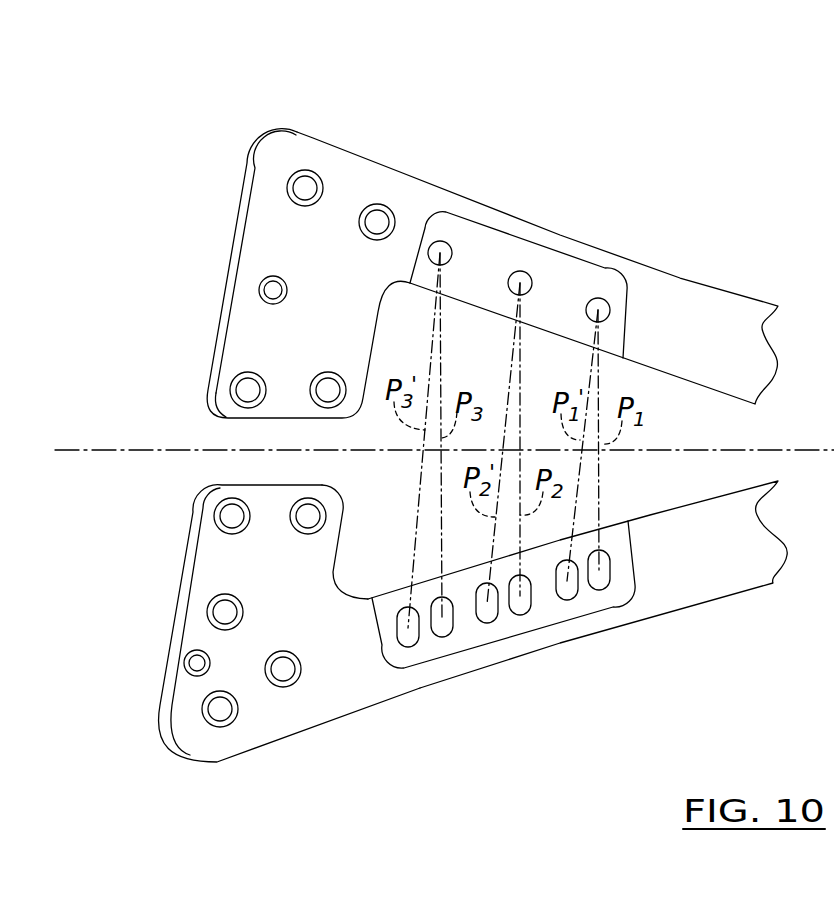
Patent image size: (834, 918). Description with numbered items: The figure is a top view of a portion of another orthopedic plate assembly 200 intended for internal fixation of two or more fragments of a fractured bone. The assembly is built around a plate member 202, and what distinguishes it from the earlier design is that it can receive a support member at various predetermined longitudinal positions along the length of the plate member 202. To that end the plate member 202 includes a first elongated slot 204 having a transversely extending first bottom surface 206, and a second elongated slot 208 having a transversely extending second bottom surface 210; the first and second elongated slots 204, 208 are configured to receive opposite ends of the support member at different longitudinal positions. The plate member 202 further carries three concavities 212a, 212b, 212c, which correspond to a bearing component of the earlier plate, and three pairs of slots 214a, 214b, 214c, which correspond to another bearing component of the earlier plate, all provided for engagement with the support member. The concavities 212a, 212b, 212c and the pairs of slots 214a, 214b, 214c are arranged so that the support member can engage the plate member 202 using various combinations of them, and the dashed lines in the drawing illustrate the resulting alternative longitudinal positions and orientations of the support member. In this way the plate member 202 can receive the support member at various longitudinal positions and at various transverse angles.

The orthopedic plate assembly 200 is at (212, 86).
The plate member 202 is at (256, 238).
The first elongated slot 204 is at (426, 214).
The first bottom surface 206 is at (618, 335).
The second elongated slot 208 is at (641, 598).
The second bottom surface 210 is at (623, 567).
The concavity 212a is at (447, 240).
The concavity 212b is at (523, 268).
The concavity 212c is at (600, 296).
The pair of slots 214a is at (442, 638).
The pair of slots 214b is at (520, 616).
The pair of slots 214c is at (599, 591).